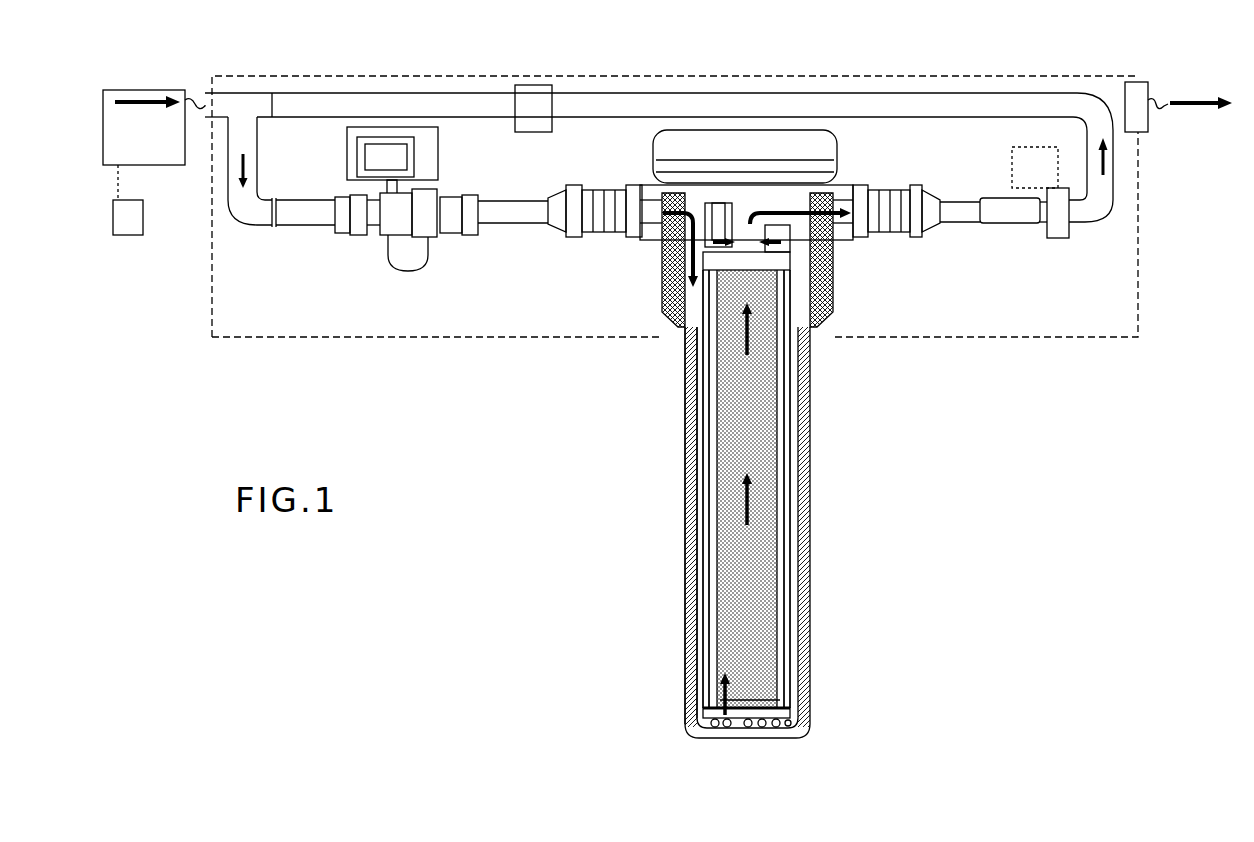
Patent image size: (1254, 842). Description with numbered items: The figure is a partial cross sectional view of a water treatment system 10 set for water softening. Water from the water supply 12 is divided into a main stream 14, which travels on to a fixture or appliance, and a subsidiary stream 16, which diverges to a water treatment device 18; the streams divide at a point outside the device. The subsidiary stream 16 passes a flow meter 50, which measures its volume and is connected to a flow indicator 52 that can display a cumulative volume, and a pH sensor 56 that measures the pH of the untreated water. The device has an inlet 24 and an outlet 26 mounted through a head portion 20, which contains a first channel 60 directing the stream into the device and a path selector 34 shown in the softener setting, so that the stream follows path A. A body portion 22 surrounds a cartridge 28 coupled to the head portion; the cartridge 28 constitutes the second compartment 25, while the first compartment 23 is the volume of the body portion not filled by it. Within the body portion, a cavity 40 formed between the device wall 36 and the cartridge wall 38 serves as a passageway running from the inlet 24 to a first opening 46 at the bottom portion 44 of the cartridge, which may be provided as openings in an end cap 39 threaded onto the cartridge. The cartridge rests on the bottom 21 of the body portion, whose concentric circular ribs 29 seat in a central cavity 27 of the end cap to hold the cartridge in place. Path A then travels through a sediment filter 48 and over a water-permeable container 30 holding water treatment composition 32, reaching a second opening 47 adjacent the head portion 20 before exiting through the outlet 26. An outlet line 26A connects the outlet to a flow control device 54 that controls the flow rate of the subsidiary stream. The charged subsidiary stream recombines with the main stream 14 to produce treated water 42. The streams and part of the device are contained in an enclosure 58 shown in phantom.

The water treatment system 10 is at (575, 405).
The water supply 12 is at (154, 127).
The main stream 14 is at (305, 104).
The subsidiary stream 16 is at (298, 226).
The water treatment device 18 is at (739, 532).
The head portion 20 is at (848, 274).
The bottom 21 is at (714, 750).
The body portion 22 is at (761, 483).
The first compartment 23 is at (690, 560).
The inlet 24 is at (601, 233).
The second compartment 25 is at (756, 698).
The outlet 26 is at (893, 237).
The outlet line 26A is at (953, 222).
The central cavity 27 is at (750, 728).
The cartridge 28 is at (792, 535).
The concentric circular ribs 29 is at (761, 728).
The water-permeable container 30 is at (780, 612).
The water treatment composition 32 is at (762, 578).
The path selector 34 is at (847, 147).
The device wall 36 is at (690, 456).
The cartridge wall 38 is at (706, 487).
The end cap 39 is at (684, 710).
The cavity 40 is at (702, 520).
The treated water 42 is at (1190, 132).
The bottom portion 44 is at (733, 710).
The first opening 46 is at (698, 736).
The second opening 47 is at (750, 238).
The sediment filter 48 is at (782, 730).
The flow meter 50 is at (540, 92).
The flow indicator 52 is at (440, 150).
The flow control device 54 is at (1010, 224).
The pH sensor 56 is at (128, 228).
The enclosure 58 is at (1139, 290).
The first channel 60 is at (678, 224).